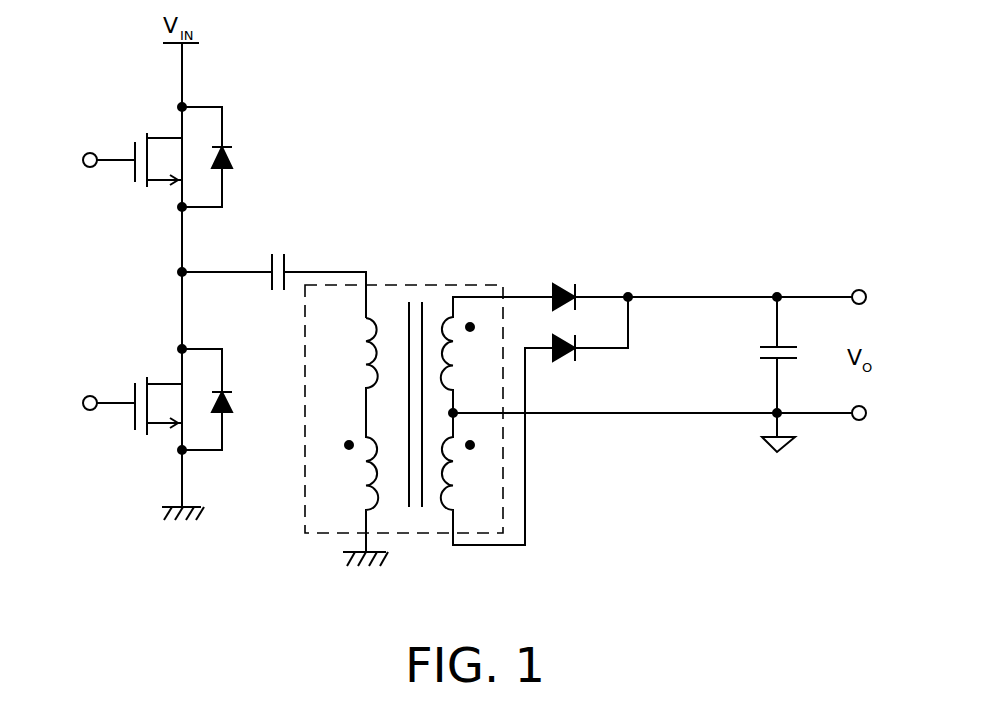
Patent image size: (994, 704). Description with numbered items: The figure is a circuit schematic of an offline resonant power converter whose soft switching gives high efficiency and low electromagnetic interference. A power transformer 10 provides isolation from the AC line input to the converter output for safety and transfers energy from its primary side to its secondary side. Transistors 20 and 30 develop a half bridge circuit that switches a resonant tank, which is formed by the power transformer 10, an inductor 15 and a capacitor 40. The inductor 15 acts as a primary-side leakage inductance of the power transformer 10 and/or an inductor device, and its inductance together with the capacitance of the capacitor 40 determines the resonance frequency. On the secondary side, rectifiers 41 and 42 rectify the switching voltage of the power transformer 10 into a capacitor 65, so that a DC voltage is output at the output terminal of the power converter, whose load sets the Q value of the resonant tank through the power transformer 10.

The power transformer 10 is at (401, 362).
The inductor 15 is at (335, 400).
The transistor 20 is at (193, 150).
The transistor 30 is at (160, 437).
The capacitor 40 is at (300, 243).
The rectifier 41 is at (567, 272).
The rectifier 42 is at (565, 368).
The capacitor 65 is at (761, 374).